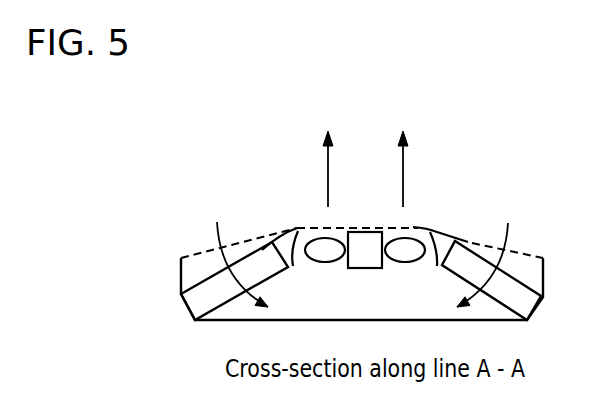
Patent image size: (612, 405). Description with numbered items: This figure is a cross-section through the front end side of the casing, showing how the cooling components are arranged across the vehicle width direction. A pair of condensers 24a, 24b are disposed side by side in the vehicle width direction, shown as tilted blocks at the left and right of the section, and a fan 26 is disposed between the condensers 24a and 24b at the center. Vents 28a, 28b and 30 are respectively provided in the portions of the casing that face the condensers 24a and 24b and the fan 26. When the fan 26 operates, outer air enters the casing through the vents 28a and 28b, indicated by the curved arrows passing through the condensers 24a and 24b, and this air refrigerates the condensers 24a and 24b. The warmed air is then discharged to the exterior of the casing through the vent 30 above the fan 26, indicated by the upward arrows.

The condenser 24a is at (258, 257).
The condenser 24b is at (463, 258).
The fan 26 is at (360, 233).
The vent 28a is at (201, 254).
The vent 28b is at (537, 258).
The vent 30 is at (390, 227).